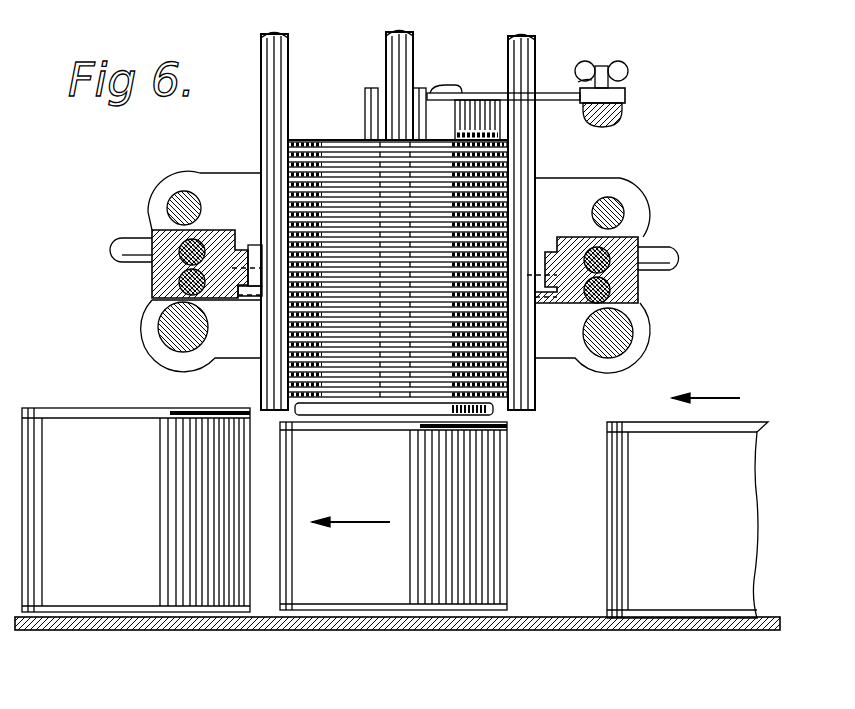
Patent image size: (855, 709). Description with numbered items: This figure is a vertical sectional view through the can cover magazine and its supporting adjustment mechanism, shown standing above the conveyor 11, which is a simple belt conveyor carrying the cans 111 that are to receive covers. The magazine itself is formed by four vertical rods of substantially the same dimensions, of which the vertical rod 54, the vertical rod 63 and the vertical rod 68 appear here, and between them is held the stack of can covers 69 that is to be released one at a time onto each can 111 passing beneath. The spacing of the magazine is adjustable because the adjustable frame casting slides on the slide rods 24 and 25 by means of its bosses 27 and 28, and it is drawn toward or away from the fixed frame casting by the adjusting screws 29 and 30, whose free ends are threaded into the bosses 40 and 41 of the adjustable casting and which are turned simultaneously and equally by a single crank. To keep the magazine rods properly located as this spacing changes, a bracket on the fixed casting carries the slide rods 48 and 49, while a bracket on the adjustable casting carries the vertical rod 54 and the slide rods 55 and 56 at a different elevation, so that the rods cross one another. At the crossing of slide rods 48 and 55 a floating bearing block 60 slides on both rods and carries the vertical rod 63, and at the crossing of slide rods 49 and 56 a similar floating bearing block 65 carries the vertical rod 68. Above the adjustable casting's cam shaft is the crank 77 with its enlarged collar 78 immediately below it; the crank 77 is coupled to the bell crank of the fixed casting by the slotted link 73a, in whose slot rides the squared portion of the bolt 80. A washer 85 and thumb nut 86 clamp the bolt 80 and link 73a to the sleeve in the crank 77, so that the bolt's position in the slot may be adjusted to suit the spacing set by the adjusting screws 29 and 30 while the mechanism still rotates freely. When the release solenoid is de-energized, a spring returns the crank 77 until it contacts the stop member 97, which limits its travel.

The conveyor 11 is at (576, 632).
The slide rod 24 is at (172, 350).
The slide rod 25 is at (622, 327).
The boss 27 is at (158, 333).
The boss 28 is at (600, 367).
The adjusting screw 29 is at (170, 198).
The adjusting screw 30 is at (624, 207).
The boss 40 is at (192, 160).
The boss 41 is at (613, 178).
The slide rod 48 is at (210, 233).
The slide rod 49 is at (592, 244).
The vertical rod 54 is at (414, 62).
The slide rod 55 is at (155, 294).
The slide rod 56 is at (660, 283).
The floating bearing block 60 is at (152, 268).
The vertical rod 63 is at (289, 53).
The floating bearing block 65 is at (640, 245).
The vertical rod 68 is at (537, 50).
The stack of can covers 69 is at (508, 168).
The link 73a is at (623, 112).
The crank 77 is at (370, 88).
The collar 78 is at (366, 138).
The bolt 80 is at (608, 63).
The washer 85 is at (626, 91).
The thumb nut 86 is at (578, 72).
The stop member 97 is at (499, 136).
The can 111 is at (493, 488).